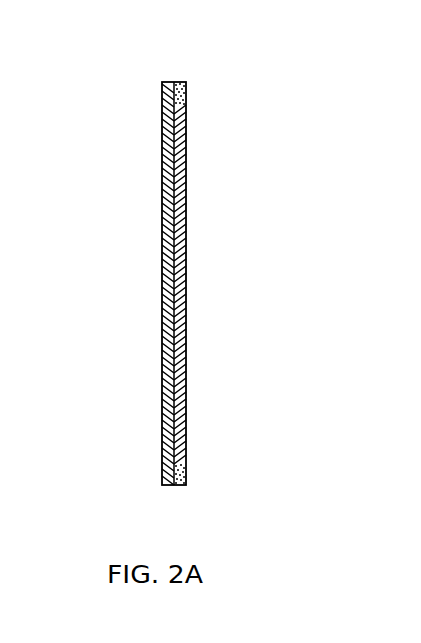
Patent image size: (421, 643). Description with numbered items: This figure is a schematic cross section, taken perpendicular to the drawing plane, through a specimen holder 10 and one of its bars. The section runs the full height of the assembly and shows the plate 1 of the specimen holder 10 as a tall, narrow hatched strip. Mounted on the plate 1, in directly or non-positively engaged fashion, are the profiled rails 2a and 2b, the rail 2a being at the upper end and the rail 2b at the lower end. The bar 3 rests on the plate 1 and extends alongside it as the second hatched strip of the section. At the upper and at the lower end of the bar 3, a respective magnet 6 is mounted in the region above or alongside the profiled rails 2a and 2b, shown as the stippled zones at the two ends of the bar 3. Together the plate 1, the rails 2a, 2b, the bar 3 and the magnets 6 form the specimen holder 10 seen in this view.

The plate 1 is at (162, 215).
The profiled rail 2a is at (163, 91).
The profiled rail 2b is at (162, 484).
The bar 3 is at (186, 223).
The magnet 6 is at (186, 92).
The specimen holder 10 is at (110, 321).